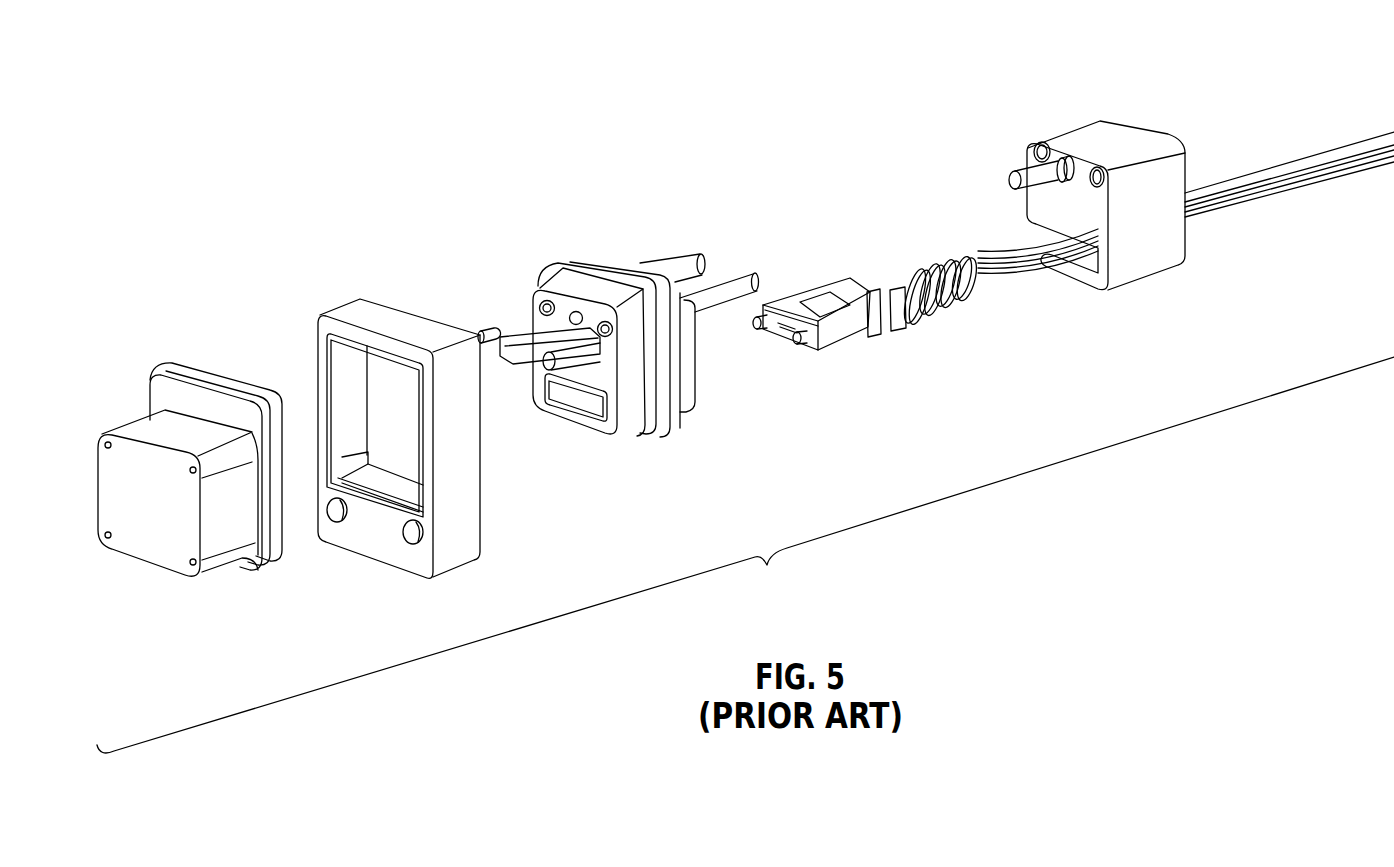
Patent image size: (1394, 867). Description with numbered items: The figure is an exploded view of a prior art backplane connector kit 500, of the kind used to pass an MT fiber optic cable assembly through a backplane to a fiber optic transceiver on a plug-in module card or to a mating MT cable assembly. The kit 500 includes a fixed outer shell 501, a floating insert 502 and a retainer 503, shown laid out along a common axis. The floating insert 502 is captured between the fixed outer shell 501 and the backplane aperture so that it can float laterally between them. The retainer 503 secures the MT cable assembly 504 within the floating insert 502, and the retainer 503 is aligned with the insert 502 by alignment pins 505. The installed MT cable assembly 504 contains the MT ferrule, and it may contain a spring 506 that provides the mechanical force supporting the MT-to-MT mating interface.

The backplane connector kit 500 is at (674, 101).
The fixed outer shell 501 is at (457, 567).
The floating insert 502 is at (660, 437).
The retainer 503 is at (1182, 155).
The MT cable assembly 504 is at (925, 344).
The alignment pins 505 is at (667, 258).
The spring 506 is at (977, 302).